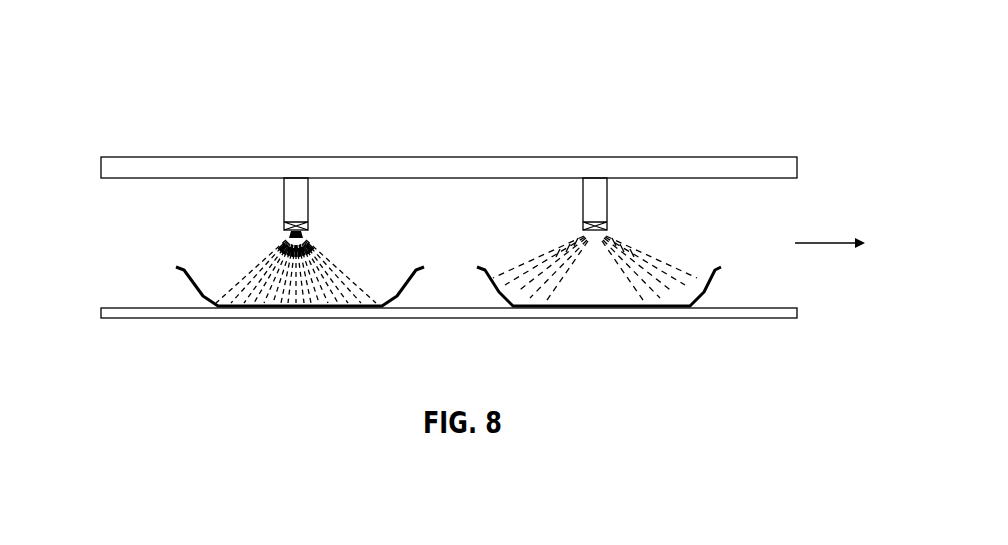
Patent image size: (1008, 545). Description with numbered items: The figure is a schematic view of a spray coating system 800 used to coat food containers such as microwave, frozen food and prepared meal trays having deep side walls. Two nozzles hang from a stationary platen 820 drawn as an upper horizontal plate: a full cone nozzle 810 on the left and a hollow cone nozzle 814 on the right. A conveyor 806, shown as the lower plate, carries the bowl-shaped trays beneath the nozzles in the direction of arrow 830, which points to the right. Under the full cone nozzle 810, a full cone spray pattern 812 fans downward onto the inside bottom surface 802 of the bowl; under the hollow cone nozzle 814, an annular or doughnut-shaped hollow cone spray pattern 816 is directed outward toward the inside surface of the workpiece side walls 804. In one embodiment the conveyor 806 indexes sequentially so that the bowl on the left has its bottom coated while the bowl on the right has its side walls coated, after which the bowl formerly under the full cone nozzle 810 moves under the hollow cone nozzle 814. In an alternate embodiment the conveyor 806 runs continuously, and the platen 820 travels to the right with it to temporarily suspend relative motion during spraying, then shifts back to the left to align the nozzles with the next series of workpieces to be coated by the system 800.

The spray coating system 800 is at (148, 47).
The inside bottom surface 802 is at (567, 307).
The workpiece side walls 804 is at (196, 284).
The conveyor 806 is at (750, 319).
The full cone nozzle 810 is at (310, 212).
The full cone spray pattern 812 is at (320, 253).
The hollow cone nozzle 814 is at (610, 212).
The hollow cone spray pattern 816 is at (647, 251).
The stationary platen 820 is at (683, 157).
The arrow 830 is at (832, 242).